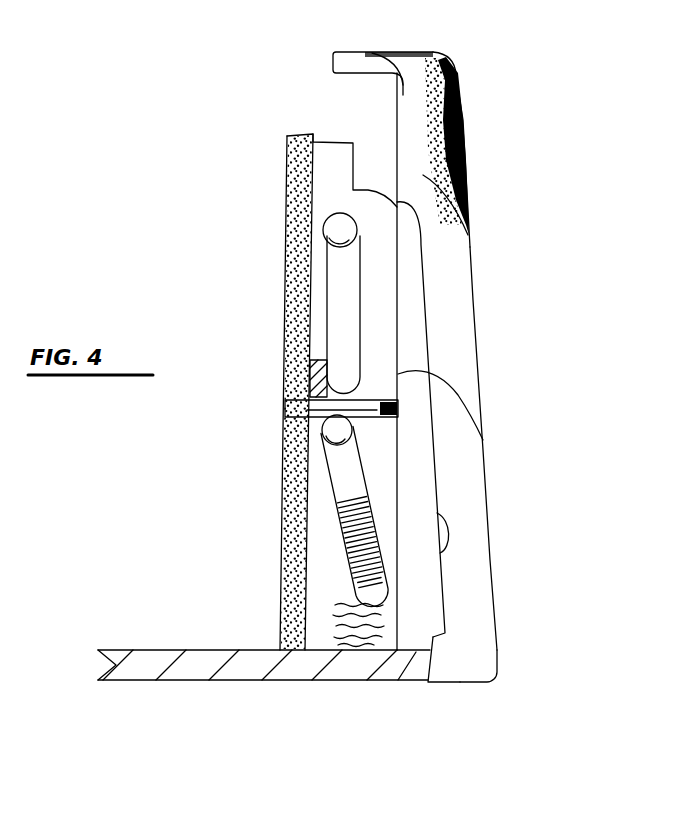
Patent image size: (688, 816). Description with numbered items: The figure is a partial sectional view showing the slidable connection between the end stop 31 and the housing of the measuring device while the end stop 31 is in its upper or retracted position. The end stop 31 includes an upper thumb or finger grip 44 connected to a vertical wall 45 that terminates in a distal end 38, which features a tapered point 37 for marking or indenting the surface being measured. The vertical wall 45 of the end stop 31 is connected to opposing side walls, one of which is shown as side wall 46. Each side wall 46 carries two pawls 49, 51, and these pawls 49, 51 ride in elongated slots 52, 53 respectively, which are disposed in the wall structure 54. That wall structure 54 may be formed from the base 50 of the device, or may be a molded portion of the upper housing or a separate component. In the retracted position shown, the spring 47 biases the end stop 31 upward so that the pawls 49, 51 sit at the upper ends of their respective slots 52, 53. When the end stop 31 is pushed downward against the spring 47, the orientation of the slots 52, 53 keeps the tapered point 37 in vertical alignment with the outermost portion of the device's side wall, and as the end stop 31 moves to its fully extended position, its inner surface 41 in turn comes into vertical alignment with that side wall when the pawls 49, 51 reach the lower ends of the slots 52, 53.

The end stop 31 is at (512, 97).
The thumb or finger grip 44 is at (372, 50).
The side wall 46 is at (460, 252).
The vertical wall 45 is at (472, 310).
The wall structure 54 is at (484, 437).
The tapered point 37 is at (468, 684).
The distal end 38 is at (438, 683).
The inner surface 41 is at (410, 658).
The base 50 is at (140, 660).
The pawl 49 is at (335, 228).
The elongated slot 52 is at (335, 320).
The pawl 51 is at (320, 425).
The elongated slot 53 is at (345, 481).
The spring 47 is at (340, 522).